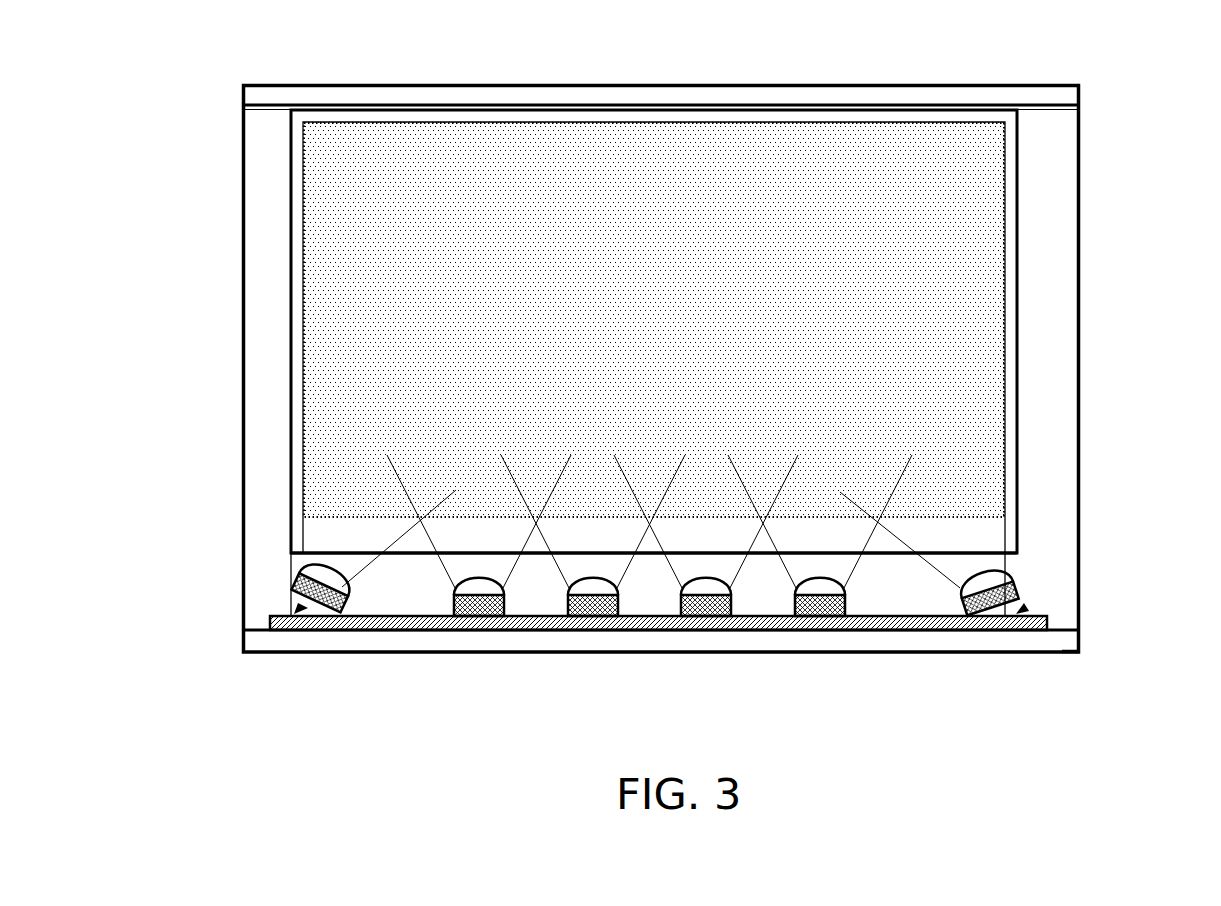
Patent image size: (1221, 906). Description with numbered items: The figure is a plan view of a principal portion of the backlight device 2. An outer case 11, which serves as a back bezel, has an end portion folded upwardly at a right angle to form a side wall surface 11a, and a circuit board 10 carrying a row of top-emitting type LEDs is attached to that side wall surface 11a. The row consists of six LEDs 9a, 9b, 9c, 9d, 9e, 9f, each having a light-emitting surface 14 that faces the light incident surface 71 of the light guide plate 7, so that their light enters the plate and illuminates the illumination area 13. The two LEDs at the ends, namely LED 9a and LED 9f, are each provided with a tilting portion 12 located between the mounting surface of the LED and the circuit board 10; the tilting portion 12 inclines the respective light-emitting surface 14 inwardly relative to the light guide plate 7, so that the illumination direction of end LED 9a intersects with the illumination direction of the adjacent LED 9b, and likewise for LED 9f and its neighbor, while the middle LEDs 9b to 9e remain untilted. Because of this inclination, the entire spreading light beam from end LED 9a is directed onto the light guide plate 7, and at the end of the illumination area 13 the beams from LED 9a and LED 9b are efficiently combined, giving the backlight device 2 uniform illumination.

The backlight device 2 is at (610, 66).
The light guide plate 7 is at (975, 537).
The light incident surface 71 is at (871, 560).
The LED 9a is at (298, 586).
The LED 9b is at (460, 617).
The LED 9c is at (575, 617).
The LED 9d is at (684, 617).
The LED 9e is at (800, 617).
The LED 9f is at (963, 632).
The circuit board 10 is at (997, 633).
The outer case 11 is at (245, 128).
The side wall surface 11a is at (1080, 655).
The tilting portion 12 is at (299, 607).
The illumination area 13 is at (968, 356).
The light-emitting surface 14 is at (297, 553).